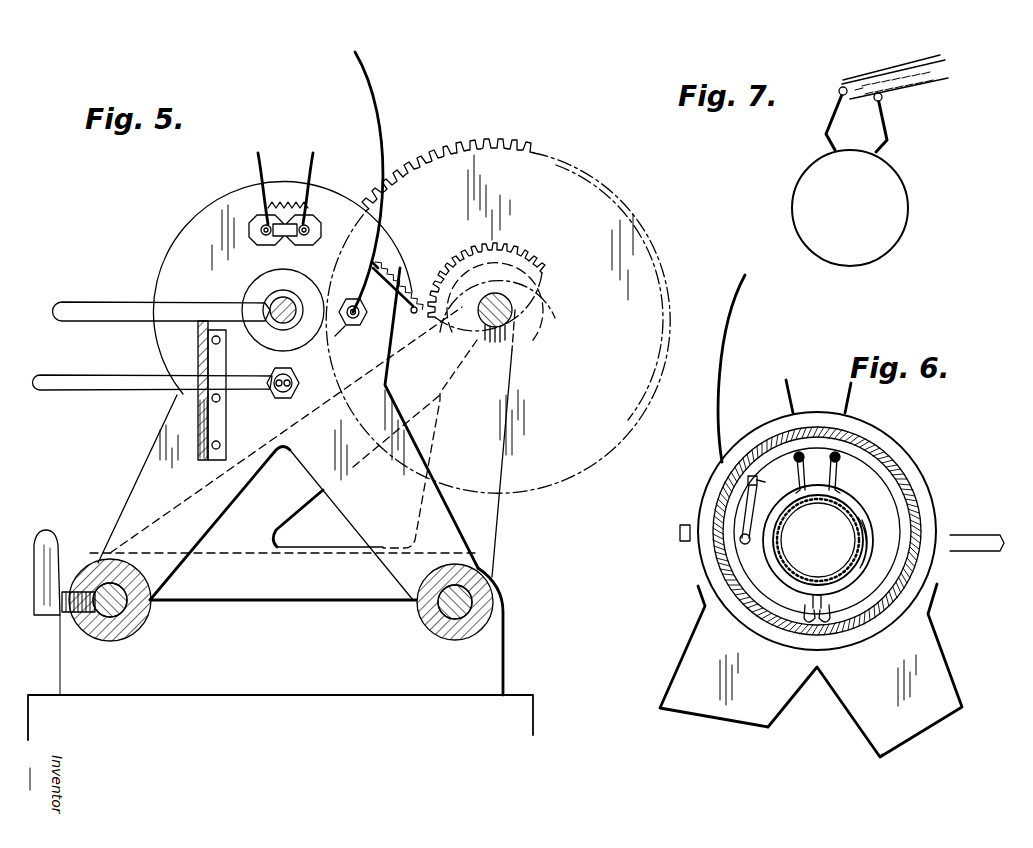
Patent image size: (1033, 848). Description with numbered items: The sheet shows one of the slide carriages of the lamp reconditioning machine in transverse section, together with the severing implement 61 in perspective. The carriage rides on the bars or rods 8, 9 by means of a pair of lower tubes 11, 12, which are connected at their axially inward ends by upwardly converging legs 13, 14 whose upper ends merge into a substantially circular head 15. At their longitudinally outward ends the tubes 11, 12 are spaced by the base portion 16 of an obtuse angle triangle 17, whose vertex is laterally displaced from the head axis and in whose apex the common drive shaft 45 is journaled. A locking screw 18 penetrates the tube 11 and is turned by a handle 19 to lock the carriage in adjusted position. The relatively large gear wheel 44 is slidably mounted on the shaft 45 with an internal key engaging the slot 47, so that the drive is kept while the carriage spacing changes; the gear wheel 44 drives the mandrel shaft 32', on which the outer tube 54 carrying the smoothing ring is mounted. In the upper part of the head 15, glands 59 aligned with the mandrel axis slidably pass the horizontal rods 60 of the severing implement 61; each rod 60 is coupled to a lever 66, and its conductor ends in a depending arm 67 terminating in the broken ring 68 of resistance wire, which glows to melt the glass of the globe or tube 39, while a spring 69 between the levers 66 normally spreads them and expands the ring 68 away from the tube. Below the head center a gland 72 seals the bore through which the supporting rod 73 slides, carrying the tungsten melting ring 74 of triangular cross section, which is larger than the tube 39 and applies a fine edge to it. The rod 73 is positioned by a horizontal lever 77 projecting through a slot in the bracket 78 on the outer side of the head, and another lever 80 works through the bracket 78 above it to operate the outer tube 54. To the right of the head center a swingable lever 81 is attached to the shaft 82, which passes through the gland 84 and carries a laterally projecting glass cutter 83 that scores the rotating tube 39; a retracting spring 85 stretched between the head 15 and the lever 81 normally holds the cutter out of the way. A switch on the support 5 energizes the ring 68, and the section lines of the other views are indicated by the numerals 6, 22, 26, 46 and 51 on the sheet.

In FIG. 5, the support 5 is at (524, 686).
In FIG. 5, the frame upright 6 is at (503, 636).
In FIG. 5, the bar or rod 8 is at (98, 625).
In FIG. 5, the bar or rod 9 is at (498, 591).
In FIG. 5, the lower tube 11 is at (120, 630).
In FIG. 5, the lower tube 12 is at (448, 632).
In FIG. 5, the leg 13 is at (142, 474).
In FIG. 6, the leg 13 is at (890, 735).
In FIG. 5, the leg 14 is at (420, 505).
In FIG. 6, the leg 14 is at (770, 720).
In FIG. 5, the head 15 is at (186, 232).
In FIG. 5, the base portion 16 is at (249, 600).
In FIG. 5, the obtuse angle triangle 17 is at (500, 516).
In FIG. 5, the locking screw 18 is at (70, 612).
In FIG. 5, the handle 19 is at (50, 535).
In FIG. 6, the outer ring 22 is at (915, 480).
In FIG. 6, the inner ring 26 is at (872, 482).
In FIG. 5, the mandrel shaft 32' is at (309, 293).
In FIG. 6, the globe or tube 39 is at (792, 556).
In FIG. 5, the gear wheel 44 is at (498, 136).
In FIG. 5, the common drive shaft 45 is at (493, 293).
In FIG. 5, the hub 46 is at (472, 328).
In FIG. 5, the slot 47 is at (503, 300).
In FIG. 5, the small gear 51 is at (506, 241).
In FIG. 5, the outer tube 54 is at (292, 297).
In FIG. 5, the gland 59 is at (272, 246).
In FIG. 7, the horizontal rod 60 is at (912, 80).
In FIG. 7, the severing implement 61 is at (905, 96).
In FIG. 5, the lever 66 is at (256, 165).
In FIG. 6, the lever 66 is at (846, 393).
In FIG. 7, the arm 67 is at (880, 127).
In FIG. 6, the arm 67 is at (836, 476).
In FIG. 7, the broken ring 68 is at (908, 196).
In FIG. 6, the broken ring 68 is at (860, 518).
In FIG. 5, the spring 69 is at (287, 203).
In FIG. 5, the gland 72 is at (266, 395).
In FIG. 5, the supporting rod 73 is at (298, 383).
In FIG. 6, the supporting rod 73 is at (826, 612).
In FIG. 6, the tungsten melting ring 74 is at (866, 540).
In FIG. 5, the horizontal lever 77 is at (92, 376).
In FIG. 6, the horizontal lever 77 is at (970, 540).
In FIG. 5, the bracket 78 is at (188, 404).
In FIG. 5, the lever 80 is at (90, 302).
In FIG. 5, the swingable lever 81 is at (374, 92).
In FIG. 6, the swingable lever 81 is at (724, 348).
In FIG. 5, the shaft 82 is at (336, 333).
In FIG. 6, the shaft 82 is at (745, 540).
In FIG. 6, the glass cutter 83 is at (746, 480).
In FIG. 5, the gland 84 is at (358, 326).
In FIG. 5, the retracting spring 85 is at (378, 276).